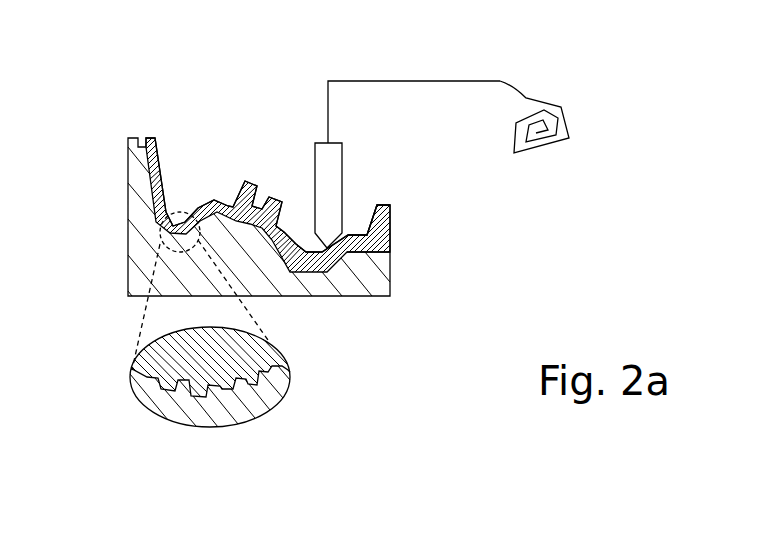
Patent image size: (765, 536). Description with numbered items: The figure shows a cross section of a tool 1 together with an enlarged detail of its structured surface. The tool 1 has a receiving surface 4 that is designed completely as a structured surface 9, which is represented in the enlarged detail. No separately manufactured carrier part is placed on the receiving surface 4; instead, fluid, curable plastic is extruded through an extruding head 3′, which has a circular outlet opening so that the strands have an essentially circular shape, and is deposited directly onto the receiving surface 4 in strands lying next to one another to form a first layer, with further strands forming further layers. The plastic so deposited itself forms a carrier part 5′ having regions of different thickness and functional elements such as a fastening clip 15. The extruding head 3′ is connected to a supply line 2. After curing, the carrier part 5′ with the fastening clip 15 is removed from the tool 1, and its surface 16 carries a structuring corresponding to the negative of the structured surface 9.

The tool 1 is at (466, 64).
The supply line 2 is at (300, 122).
The extruding head 3′ is at (343, 173).
The receiving surface 4 is at (392, 243).
The carrier part 5′ is at (105, 143).
The structured surface 9 is at (310, 296).
The fastening clip 15 is at (245, 186).
The surface 16 is at (357, 280).